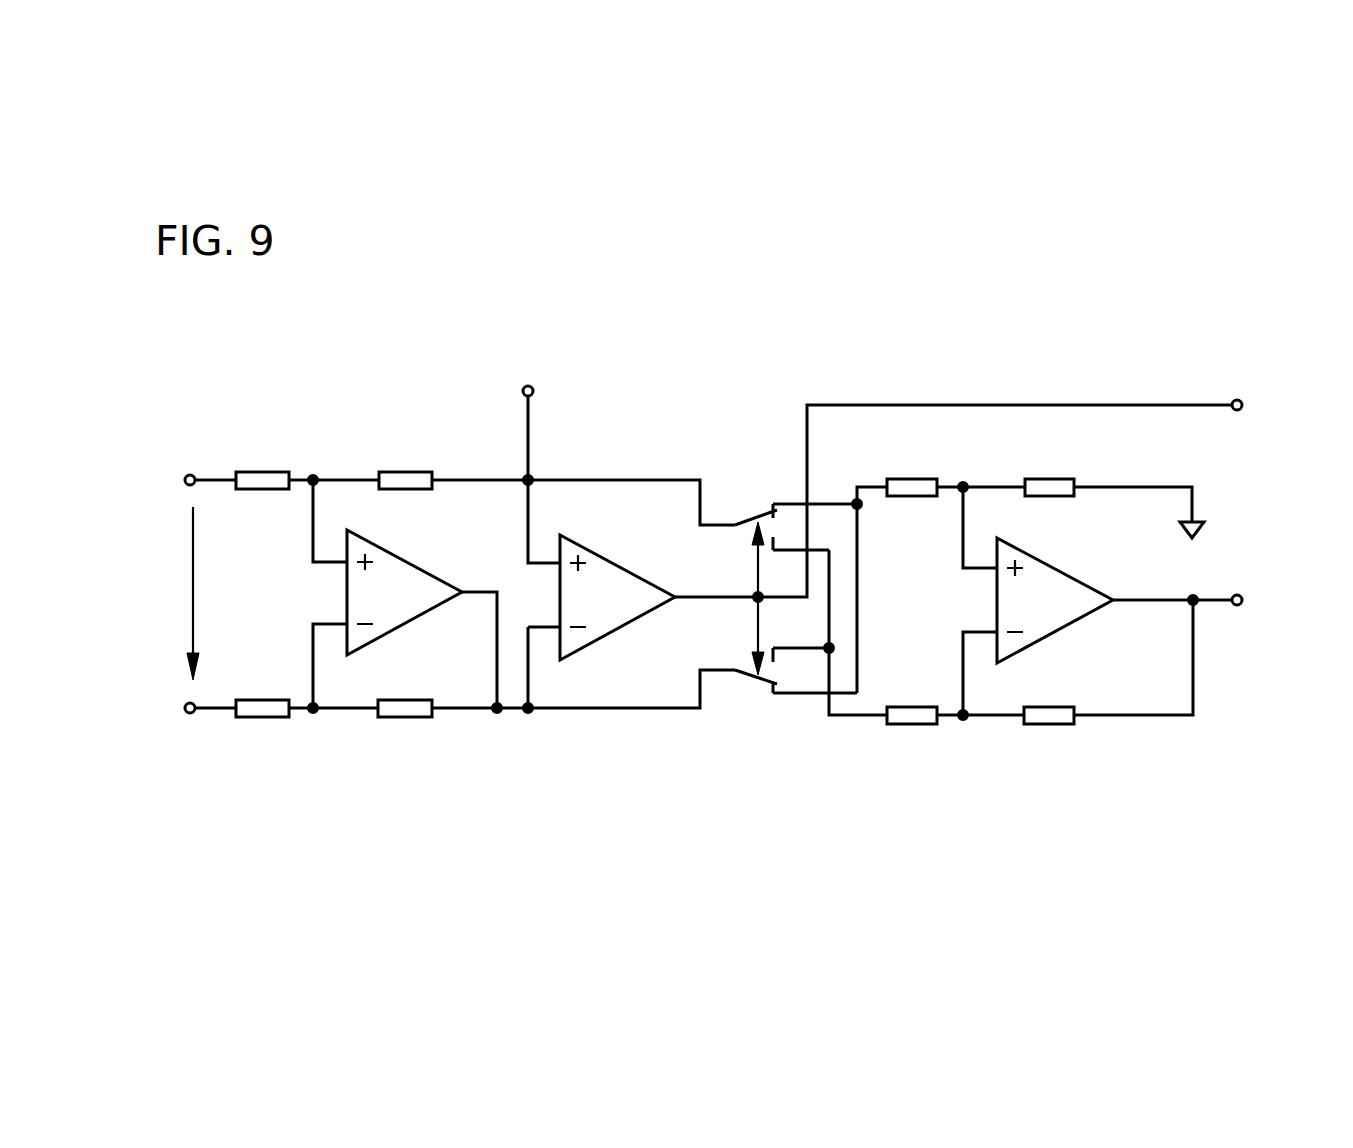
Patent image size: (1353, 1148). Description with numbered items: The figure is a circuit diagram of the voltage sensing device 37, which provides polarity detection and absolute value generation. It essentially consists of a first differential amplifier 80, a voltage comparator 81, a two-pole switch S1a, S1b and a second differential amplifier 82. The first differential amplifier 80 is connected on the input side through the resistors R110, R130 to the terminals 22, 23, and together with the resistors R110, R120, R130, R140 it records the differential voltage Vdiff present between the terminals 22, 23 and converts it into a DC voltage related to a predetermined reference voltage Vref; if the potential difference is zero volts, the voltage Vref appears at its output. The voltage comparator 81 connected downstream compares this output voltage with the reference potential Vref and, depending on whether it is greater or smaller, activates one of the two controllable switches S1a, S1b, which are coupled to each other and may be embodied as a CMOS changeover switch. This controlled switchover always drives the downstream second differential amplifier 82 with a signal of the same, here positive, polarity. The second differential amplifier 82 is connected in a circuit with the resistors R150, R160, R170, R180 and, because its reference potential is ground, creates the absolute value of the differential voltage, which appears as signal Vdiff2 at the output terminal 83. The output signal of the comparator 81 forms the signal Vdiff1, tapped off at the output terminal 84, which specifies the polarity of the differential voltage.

The terminal 22 is at (187, 472).
The terminal 23 is at (190, 713).
The voltage sensing device 37 is at (388, 372).
The first differential amplifier 80 is at (408, 557).
The voltage comparator 81 is at (623, 560).
The second differential amplifier 82 is at (1053, 567).
The output terminal 83 is at (1238, 610).
The output terminal 84 is at (1240, 400).
The resistor R110 is at (262, 470).
The resistor R120 is at (410, 470).
The resistor R130 is at (262, 717).
The resistor R140 is at (405, 717).
The resistor R150 is at (910, 478).
The resistor R160 is at (1047, 478).
The resistor R170 is at (913, 725).
The resistor R180 is at (1053, 727).
The controllable switch S1a is at (745, 510).
The controllable switch S1b is at (752, 692).